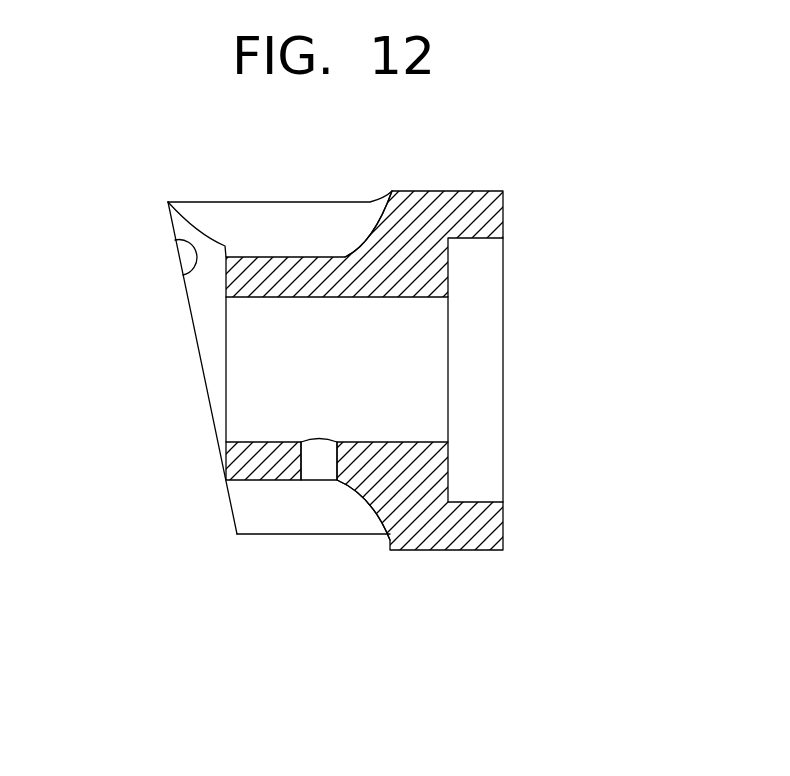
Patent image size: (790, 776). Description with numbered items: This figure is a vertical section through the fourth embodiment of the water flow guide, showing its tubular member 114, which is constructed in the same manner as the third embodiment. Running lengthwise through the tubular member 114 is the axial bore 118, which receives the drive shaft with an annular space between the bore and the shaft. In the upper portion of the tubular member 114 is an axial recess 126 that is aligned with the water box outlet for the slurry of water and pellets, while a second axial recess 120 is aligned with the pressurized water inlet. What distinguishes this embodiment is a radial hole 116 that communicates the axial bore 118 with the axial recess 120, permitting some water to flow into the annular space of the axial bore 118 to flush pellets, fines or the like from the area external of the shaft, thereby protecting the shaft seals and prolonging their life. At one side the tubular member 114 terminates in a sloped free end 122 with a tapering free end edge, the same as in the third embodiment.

The tubular member 114 is at (432, 230).
The radial hole 116 is at (301, 460).
The axial bore 118 is at (405, 441).
The axial recess 120 is at (268, 487).
The free end 122 is at (203, 365).
The axial recess 126 is at (293, 227).